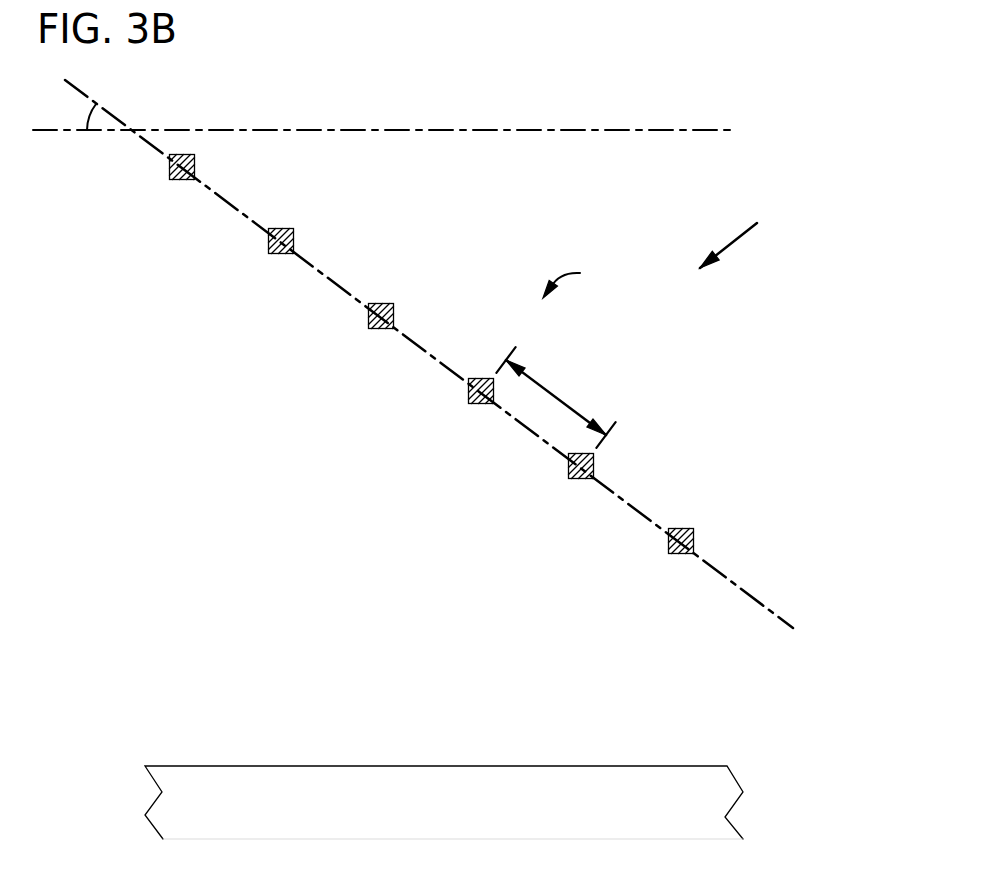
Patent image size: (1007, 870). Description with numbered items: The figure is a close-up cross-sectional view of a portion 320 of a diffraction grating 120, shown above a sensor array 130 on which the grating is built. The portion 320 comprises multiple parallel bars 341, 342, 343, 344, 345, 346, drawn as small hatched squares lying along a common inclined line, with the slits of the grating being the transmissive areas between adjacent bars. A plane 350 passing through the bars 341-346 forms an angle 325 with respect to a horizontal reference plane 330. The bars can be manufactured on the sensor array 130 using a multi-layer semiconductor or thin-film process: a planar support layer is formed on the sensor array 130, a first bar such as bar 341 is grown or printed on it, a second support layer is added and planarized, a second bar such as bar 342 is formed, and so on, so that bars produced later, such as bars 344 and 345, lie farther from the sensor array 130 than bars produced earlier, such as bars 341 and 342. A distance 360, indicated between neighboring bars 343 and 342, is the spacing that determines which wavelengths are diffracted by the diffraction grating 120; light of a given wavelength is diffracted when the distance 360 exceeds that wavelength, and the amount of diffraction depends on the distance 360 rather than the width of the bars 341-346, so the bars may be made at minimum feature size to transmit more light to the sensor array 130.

The diffraction grating 120 is at (745, 231).
The sensor array 130 is at (460, 812).
The portion 320 is at (584, 280).
The angle 325 is at (70, 115).
The plane 330 is at (557, 130).
The bar 341 is at (669, 537).
The bar 342 is at (569, 462).
The bar 343 is at (469, 387).
The bar 344 is at (369, 312).
The bar 345 is at (269, 237).
The bar 346 is at (170, 163).
The plane 350 is at (743, 590).
The distance 360 is at (555, 397).